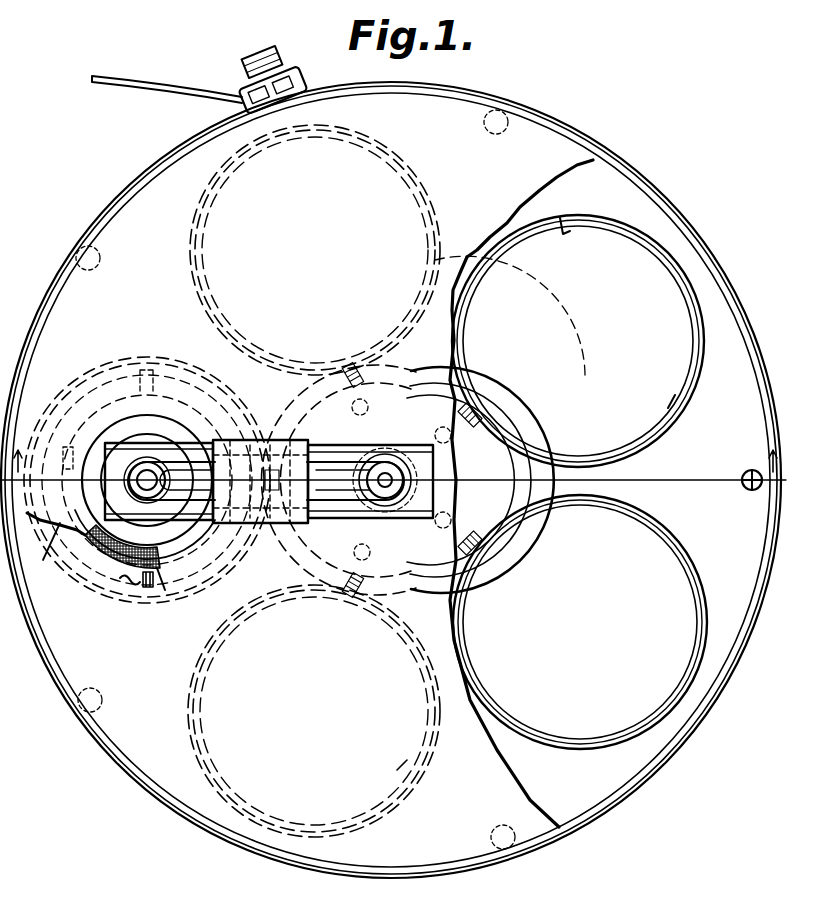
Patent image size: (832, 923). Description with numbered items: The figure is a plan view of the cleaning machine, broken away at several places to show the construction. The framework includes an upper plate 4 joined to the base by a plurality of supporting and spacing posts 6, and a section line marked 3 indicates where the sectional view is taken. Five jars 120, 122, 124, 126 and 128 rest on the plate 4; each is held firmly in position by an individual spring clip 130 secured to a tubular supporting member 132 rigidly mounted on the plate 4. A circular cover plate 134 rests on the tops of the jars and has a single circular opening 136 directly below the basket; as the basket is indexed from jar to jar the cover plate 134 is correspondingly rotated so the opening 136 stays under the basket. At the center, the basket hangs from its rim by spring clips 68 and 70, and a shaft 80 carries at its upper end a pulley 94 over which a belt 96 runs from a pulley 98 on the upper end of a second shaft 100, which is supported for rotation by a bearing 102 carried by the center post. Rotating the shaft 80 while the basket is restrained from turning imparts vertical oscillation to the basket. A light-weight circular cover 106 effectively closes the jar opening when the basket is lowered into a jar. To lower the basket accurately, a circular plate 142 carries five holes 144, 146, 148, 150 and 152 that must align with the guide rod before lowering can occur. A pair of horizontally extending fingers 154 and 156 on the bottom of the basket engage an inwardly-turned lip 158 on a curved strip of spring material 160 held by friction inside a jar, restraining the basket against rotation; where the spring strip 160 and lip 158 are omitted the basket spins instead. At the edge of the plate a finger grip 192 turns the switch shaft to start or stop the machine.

The section line 3- 3 is at (393, 450).
The upper plate 4 is at (733, 304).
The supporting and spacing posts 6 is at (100, 258).
The spring clip 68 is at (65, 450).
The spring clip 70 is at (208, 526).
The shaft 80 is at (150, 475).
The pulley 94 is at (168, 450).
The belt 96 is at (200, 472).
The pulley 98 is at (378, 506).
The shaft 100 is at (392, 480).
The bearing 102 is at (328, 444).
The circular cover 106 is at (52, 540).
The jar 120 is at (603, 225).
The jar 122 is at (700, 595).
The jar 124 is at (380, 812).
The jar 126 is at (85, 377).
The jar 128 is at (412, 166).
The spring clip 130 is at (436, 210).
The tubular supporting member 132 is at (488, 498).
The circular cover plate 134 is at (553, 150).
The circular opening 136 is at (90, 560).
The circular plate 142 is at (465, 510).
The hole 144 is at (330, 508).
The hole 146 is at (370, 407).
The hole 148 is at (436, 432).
The hole 150 is at (440, 527).
The hole 152 is at (371, 553).
The horizontally extending finger 154 is at (155, 590).
The horizontally extending finger 156 is at (165, 368).
The inwardly-turned lip 158 is at (570, 232).
The curved strip of spring material 160 is at (487, 275).
The finger grip 192 is at (278, 55).